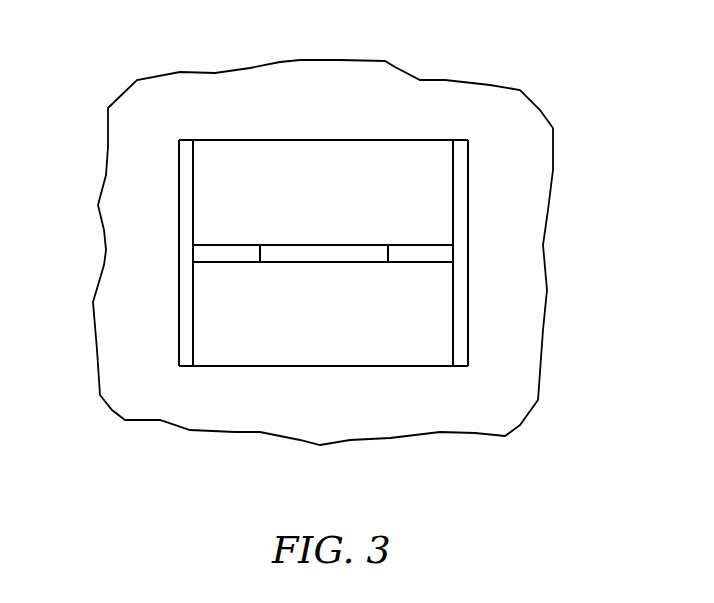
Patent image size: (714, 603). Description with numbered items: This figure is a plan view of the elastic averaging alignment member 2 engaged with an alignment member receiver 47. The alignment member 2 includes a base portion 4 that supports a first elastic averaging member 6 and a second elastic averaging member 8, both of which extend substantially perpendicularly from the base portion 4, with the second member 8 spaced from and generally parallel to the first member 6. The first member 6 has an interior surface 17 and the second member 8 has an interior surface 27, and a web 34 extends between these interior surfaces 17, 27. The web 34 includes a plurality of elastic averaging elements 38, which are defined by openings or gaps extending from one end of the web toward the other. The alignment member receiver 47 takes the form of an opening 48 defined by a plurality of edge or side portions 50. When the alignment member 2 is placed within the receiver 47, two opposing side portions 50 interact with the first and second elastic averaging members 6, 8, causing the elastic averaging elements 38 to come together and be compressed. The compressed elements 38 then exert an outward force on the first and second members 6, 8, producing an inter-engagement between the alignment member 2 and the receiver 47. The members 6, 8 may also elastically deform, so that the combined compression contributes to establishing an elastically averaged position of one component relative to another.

The elastic averaging alignment member 2 is at (240, 164).
The base portion 4 is at (297, 155).
The first elastic averaging member 6 is at (196, 302).
The second elastic averaging member 8 is at (449, 167).
The interior surface 17 is at (194, 338).
The interior surface 27 is at (453, 322).
The web 34 is at (365, 246).
The elastic averaging element 38 is at (285, 262).
The alignment member receiver 47 is at (199, 411).
The opening 48 is at (301, 351).
The side portions 50 is at (180, 191).